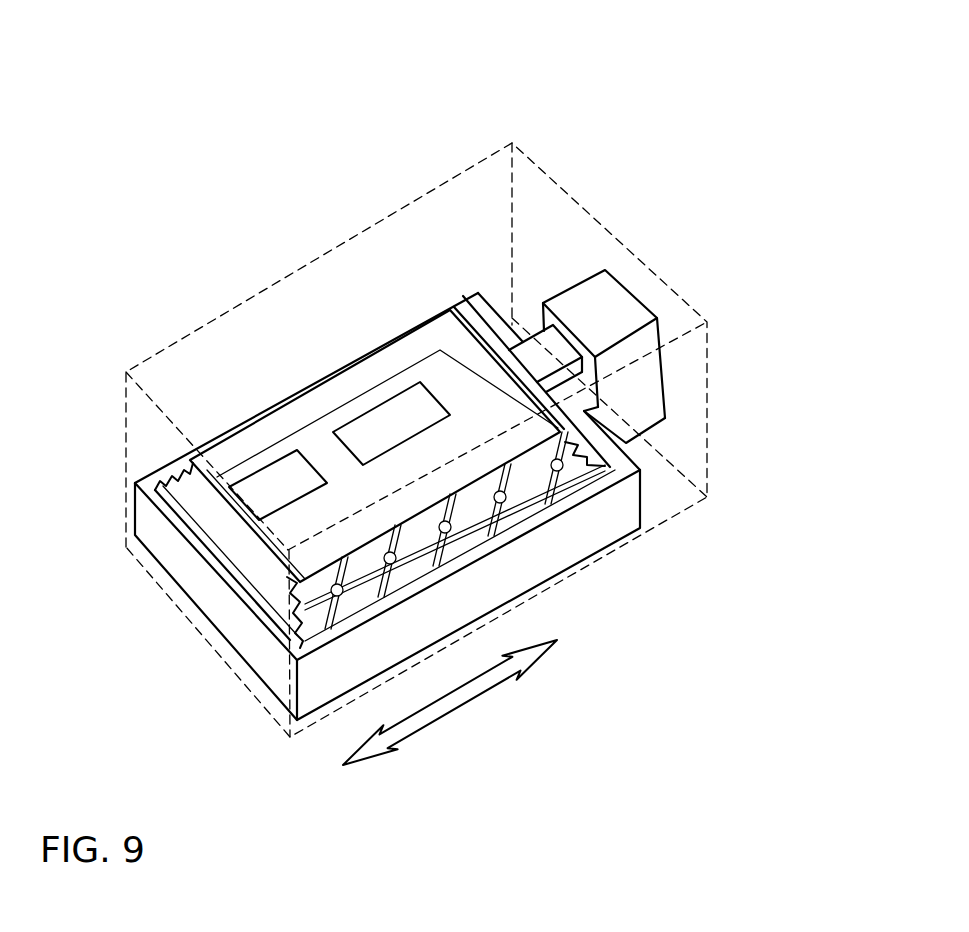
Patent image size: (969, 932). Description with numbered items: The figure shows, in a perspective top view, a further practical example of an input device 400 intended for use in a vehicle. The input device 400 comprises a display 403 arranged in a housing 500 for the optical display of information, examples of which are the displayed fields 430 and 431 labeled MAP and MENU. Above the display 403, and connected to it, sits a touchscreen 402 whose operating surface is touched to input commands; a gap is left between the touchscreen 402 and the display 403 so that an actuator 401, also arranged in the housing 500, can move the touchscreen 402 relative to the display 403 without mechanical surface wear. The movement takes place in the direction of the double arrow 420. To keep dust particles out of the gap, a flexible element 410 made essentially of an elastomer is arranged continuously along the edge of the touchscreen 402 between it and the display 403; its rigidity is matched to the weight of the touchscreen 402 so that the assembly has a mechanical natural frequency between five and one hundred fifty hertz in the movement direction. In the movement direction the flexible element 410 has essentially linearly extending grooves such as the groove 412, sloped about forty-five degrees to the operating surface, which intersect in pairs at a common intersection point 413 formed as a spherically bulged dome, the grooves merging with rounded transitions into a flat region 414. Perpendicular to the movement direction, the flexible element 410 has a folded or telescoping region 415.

The input device 400 is at (673, 183).
The actuator 401 is at (582, 293).
The touchscreen 402 is at (472, 352).
The display 403 is at (233, 632).
The flexible element 410 is at (587, 468).
The groove 412 is at (557, 485).
The intersection point 413 is at (557, 465).
The flat region 414 is at (532, 488).
The folded or telescoping region 415 is at (238, 570).
The double arrow 420 is at (463, 698).
The displayed information 430 is at (297, 452).
The displayed information 431 is at (388, 398).
The housing 500 is at (148, 388).